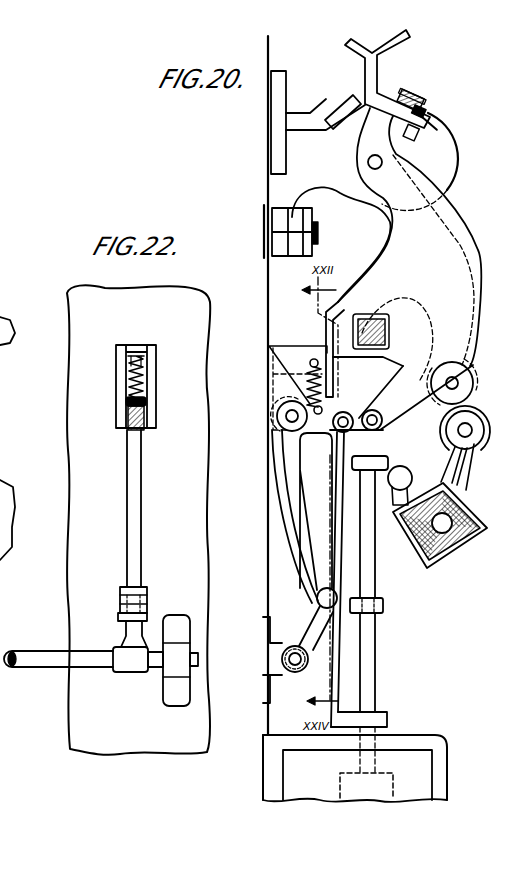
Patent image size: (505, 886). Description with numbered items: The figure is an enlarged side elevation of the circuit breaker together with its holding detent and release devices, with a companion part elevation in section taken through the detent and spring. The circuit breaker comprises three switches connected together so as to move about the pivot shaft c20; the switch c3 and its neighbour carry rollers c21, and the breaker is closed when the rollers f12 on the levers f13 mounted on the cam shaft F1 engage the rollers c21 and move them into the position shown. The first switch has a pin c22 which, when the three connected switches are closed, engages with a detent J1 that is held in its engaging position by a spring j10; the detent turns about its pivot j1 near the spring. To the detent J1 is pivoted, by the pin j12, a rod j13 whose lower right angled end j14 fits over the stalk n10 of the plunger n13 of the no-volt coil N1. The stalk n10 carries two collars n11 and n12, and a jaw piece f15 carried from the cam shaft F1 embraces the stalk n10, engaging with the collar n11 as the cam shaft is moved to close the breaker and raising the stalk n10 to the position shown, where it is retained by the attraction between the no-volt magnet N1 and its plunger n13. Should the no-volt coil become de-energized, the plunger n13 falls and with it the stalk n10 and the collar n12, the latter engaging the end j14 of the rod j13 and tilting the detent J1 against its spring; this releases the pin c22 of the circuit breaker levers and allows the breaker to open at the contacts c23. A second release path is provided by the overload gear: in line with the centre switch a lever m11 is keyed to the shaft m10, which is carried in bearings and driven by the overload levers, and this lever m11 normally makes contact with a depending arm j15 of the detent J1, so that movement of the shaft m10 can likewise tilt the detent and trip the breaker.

In FIG. 20, the contacts c23 is at (380, 76).
In FIG. 20, the switch c3 is at (468, 353).
In FIG. 20, the pivot shaft c20 is at (372, 319).
In FIG. 20, the pin c22 is at (378, 416).
In FIG. 20, the rollers c21 is at (444, 404).
In FIG. 20, the pin j12 is at (346, 413).
In FIG. 20, the spring j10 is at (310, 382).
In FIG. 22, the spring j10 is at (128, 379).
In FIG. 20, the pivot j1 is at (279, 418).
In FIG. 20, the detent J1 is at (322, 430).
In FIG. 22, the detent J1 is at (142, 418).
In FIG. 20, the depending arm j15 is at (283, 497).
In FIG. 22, the depending arm j15 is at (136, 507).
In FIG. 20, the rod j13 is at (339, 502).
In FIG. 20, the right angled end j14 is at (386, 720).
In FIG. 20, the collar n11 is at (354, 463).
In FIG. 20, the stalk n10 is at (370, 668).
In FIG. 20, the collar n12 is at (384, 607).
In FIG. 20, the plunger n13 is at (340, 776).
In FIG. 20, the jaw piece f15 is at (401, 476).
In FIG. 20, the rollers f12 is at (464, 458).
In FIG. 20, the levers f13 is at (472, 548).
In FIG. 20, the cam shaft F1 is at (425, 557).
In FIG. 22, the cam shaft F1 is at (4, 483).
In FIG. 20, the lever m11 is at (321, 612).
In FIG. 22, the lever m11 is at (143, 597).
In FIG. 20, the shaft m10 is at (282, 661).
In FIG. 22, the shaft m10 is at (33, 662).
In FIG. 20, the no-volt coil N1 is at (443, 748).